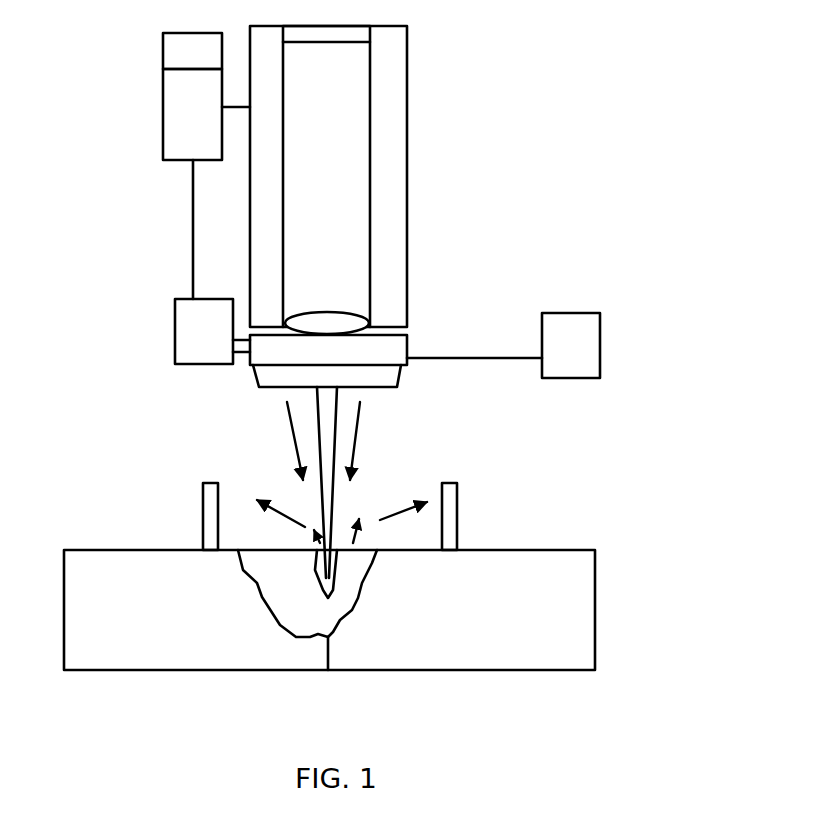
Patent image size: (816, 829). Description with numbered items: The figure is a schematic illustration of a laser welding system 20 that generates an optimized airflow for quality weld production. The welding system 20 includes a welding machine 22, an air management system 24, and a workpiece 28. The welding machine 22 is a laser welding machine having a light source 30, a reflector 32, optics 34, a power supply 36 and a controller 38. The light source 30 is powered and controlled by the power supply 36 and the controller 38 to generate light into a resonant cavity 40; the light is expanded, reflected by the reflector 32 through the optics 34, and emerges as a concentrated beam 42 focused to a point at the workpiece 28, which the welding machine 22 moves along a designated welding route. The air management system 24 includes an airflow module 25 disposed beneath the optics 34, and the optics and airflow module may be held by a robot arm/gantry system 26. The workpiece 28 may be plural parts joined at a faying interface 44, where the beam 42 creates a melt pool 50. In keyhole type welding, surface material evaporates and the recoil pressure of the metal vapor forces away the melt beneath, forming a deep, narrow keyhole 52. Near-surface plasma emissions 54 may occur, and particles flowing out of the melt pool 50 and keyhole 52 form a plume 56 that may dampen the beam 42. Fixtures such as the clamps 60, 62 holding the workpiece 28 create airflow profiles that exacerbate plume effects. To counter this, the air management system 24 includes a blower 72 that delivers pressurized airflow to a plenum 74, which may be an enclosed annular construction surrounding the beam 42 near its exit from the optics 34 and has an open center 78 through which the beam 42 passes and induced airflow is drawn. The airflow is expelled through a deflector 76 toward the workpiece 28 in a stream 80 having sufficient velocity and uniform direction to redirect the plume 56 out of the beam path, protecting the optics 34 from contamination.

The welding system 20 is at (460, 40).
The welding machine 22 is at (411, 222).
The air management system 24 is at (411, 349).
The airflow module 25 is at (250, 366).
The robot arm/gantry system 26 is at (586, 362).
The workpiece 28 is at (600, 581).
The light source 30 is at (397, 142).
The reflector 32 is at (348, 42).
The optics 34 is at (343, 311).
The power supply 36 is at (207, 68).
The controller 38 is at (207, 138).
The resonant cavity 40 is at (342, 203).
The beam 42 is at (325, 403).
The faying interface 44 is at (328, 653).
The melt pool 50 is at (275, 597).
The keyhole 52 is at (335, 575).
The plasma emissions 54 is at (360, 533).
The plume 56 is at (280, 508).
The clamp 60 is at (202, 502).
The clamp 62 is at (457, 515).
The blower 72 is at (219, 345).
The plenum 74 is at (292, 365).
The deflector 76 is at (398, 382).
The open center 78 is at (405, 328).
The stream 80 is at (360, 422).